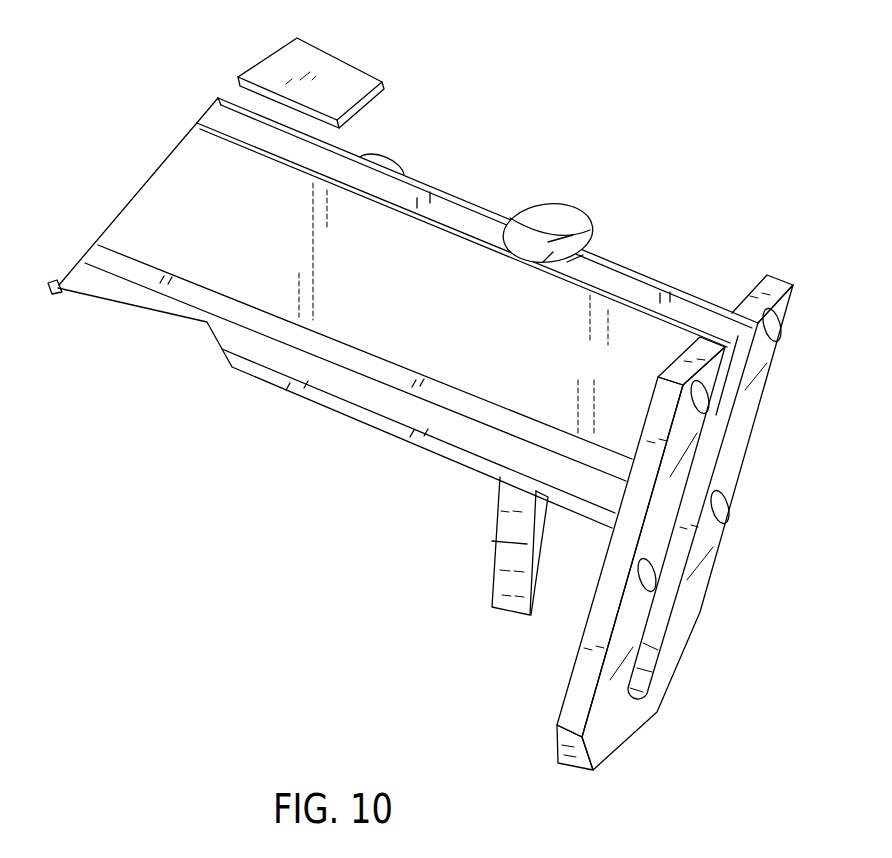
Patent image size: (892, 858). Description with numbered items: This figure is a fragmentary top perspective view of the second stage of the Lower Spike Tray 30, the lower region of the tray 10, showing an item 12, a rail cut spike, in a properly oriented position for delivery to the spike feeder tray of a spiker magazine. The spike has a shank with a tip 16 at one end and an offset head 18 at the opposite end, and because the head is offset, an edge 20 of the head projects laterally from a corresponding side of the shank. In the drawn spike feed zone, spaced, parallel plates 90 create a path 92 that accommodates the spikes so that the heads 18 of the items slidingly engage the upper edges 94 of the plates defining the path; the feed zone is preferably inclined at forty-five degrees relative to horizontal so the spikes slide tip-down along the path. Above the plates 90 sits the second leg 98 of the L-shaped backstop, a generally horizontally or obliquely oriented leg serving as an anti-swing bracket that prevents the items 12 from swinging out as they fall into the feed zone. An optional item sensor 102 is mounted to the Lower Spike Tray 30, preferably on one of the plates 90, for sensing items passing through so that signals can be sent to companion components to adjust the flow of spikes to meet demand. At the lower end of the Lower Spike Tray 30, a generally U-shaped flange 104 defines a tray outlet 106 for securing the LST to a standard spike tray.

The tray 10 is at (426, 390).
The item 12 is at (556, 230).
The tip 16 is at (510, 603).
The head 18 is at (575, 237).
The edge of the head 20 is at (515, 254).
The Lower Spike Tray 30 is at (680, 467).
The plates 90 is at (376, 283).
The path 92 is at (457, 218).
The upper edges 94 is at (417, 177).
The second leg 98 is at (327, 65).
The item sensor 102 is at (392, 158).
The flange 104 is at (780, 283).
The tray outlet 106 is at (720, 398).